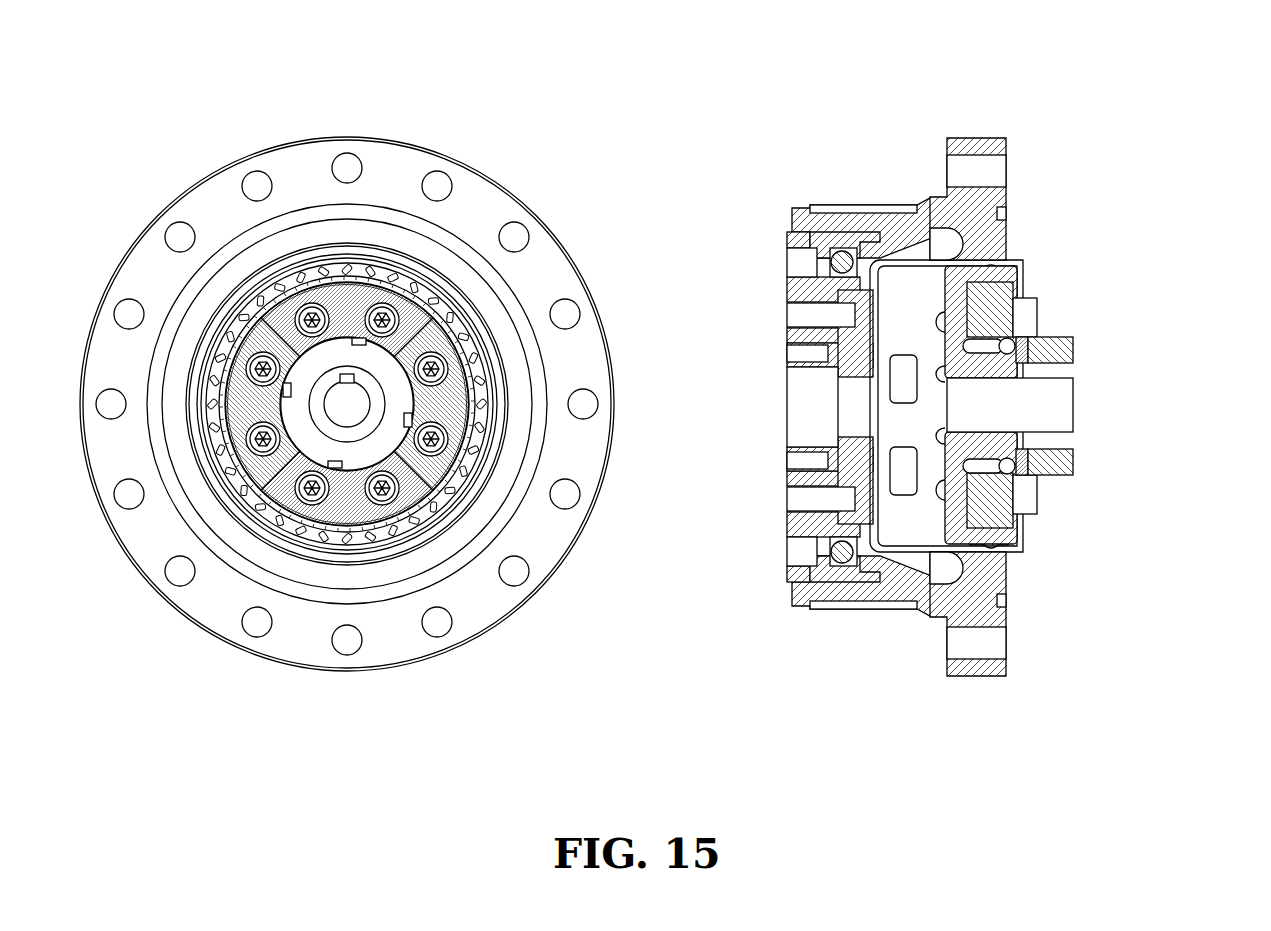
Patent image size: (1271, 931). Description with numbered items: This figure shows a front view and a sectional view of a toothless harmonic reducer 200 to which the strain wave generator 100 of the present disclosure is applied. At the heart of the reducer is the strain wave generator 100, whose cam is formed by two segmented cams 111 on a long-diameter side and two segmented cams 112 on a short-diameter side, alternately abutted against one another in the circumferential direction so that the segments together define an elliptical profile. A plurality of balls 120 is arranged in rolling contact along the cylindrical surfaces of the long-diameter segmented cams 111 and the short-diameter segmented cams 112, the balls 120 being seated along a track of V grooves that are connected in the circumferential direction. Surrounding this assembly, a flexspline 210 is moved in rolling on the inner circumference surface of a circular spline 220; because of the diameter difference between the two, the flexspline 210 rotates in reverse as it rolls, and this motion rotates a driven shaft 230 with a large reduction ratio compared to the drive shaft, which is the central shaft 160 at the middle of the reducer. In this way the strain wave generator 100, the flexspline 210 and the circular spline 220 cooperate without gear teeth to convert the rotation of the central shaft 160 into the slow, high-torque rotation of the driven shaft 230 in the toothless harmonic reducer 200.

The strain wave generator 100 is at (1047, 289).
The segmented cam on a long-diameter side 111 is at (410, 313).
The segmented cam on a short-diameter side 112 is at (452, 402).
The balls 120 is at (352, 264).
The central shaft 160 is at (370, 425).
The toothless harmonic reducer 200 is at (650, 55).
The flexspline 210 is at (295, 272).
The circular spline 220 is at (303, 262).
The driven shaft 230 is at (802, 528).